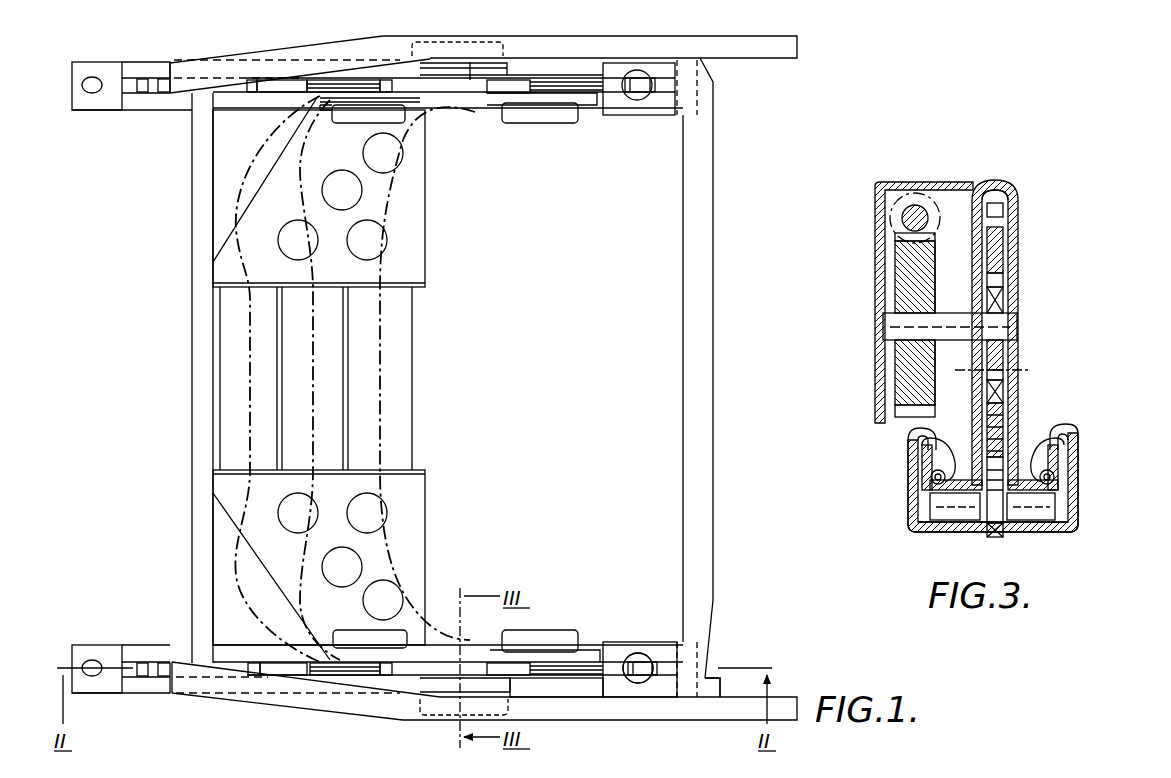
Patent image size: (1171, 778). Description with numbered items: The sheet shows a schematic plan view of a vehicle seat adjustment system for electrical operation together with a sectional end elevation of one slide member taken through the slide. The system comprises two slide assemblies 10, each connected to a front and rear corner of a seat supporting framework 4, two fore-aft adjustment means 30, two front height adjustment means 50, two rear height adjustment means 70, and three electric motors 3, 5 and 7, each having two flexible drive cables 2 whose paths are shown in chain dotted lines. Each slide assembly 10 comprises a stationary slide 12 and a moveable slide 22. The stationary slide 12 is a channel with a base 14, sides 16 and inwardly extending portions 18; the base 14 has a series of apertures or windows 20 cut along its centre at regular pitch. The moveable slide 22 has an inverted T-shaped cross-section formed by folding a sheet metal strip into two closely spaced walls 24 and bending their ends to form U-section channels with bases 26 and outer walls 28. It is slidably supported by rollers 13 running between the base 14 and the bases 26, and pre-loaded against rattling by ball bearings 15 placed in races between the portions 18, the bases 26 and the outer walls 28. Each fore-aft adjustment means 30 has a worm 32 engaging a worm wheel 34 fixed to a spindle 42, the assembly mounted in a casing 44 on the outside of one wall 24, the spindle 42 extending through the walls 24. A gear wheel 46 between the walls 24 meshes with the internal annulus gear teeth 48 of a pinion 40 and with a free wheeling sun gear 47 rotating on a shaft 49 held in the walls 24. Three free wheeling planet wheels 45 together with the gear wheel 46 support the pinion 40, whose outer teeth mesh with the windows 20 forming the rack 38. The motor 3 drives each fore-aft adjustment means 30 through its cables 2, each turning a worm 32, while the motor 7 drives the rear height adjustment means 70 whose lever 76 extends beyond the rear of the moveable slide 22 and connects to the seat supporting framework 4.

In FIG. 1, the flexible drive cables 2 is at (250, 207).
In FIG. 1, the electric motor 3 is at (330, 375).
In FIG. 1, the seat supporting framework 4 is at (693, 185).
In FIG. 1, the electric motor 5 is at (232, 363).
In FIG. 1, the electric motor 7 is at (395, 397).
In FIG. 1, the slide assembly 10 is at (480, 117).
In FIG. 3, the slide assembly 10 is at (1080, 534).
In FIG. 1, the stationary slide 12 is at (148, 684).
In FIG. 3, the stationary slide 12 is at (1080, 510).
In FIG. 3, the rollers 13 is at (958, 509).
In FIG. 3, the base 14 is at (1048, 531).
In FIG. 3, the ball bearings 15 is at (1062, 462).
In FIG. 3, the sides 16 is at (912, 494).
In FIG. 3, the inwardly extending portions 18 is at (910, 432).
In FIG. 1, the apertures or windows 20 is at (143, 93).
In FIG. 1, the moveable slide 22 is at (650, 666).
In FIG. 3, the moveable slide 22 is at (1027, 238).
In FIG. 3, the walls 24 is at (975, 263).
In FIG. 3, the bases 26 is at (935, 508).
In FIG. 3, the outer walls 28 is at (920, 460).
In FIG. 1, the fore-aft adjustment means 30 is at (470, 62).
In FIG. 3, the fore-aft adjustment means 30 is at (1024, 194).
In FIG. 3, the worm 32 is at (915, 196).
In FIG. 3, the worm wheel 34 is at (905, 278).
In FIG. 3, the rack 38 is at (1018, 531).
In FIG. 3, the pinion 40 is at (992, 538).
In FIG. 3, the spindle 42 is at (895, 324).
In FIG. 1, the casing 44 is at (440, 698).
In FIG. 3, the casing 44 is at (878, 246).
In FIG. 3, the free wheeling planet wheels 45 is at (1000, 450).
In FIG. 3, the gear wheel 46 is at (982, 303).
In FIG. 3, the sun gear 47 is at (1003, 391).
In FIG. 3, the internal annulus gear teeth 48 is at (1010, 277).
In FIG. 3, the shaft 49 is at (1010, 372).
In FIG. 1, the front height adjustment means 50 is at (336, 120).
In FIG. 1, the rear height adjustment means 70 is at (566, 125).
In FIG. 1, the lever 76 is at (710, 662).